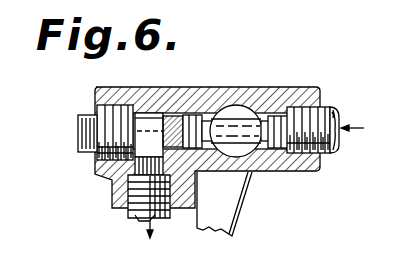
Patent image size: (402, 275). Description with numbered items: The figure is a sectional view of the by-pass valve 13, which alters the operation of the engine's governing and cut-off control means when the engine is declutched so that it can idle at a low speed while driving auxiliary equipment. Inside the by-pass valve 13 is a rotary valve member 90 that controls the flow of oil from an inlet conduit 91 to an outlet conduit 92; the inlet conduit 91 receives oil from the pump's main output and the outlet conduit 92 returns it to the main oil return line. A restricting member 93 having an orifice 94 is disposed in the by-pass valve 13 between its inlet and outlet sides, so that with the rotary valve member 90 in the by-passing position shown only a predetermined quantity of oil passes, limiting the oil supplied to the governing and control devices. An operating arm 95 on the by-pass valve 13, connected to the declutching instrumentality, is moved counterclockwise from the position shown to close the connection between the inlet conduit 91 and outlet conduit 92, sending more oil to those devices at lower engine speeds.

The by-pass valve 13 is at (277, 96).
The rotary valve member 90 is at (231, 106).
The inlet conduit 91 is at (321, 104).
The outlet conduit 92 is at (128, 218).
The restricting member 93 is at (170, 114).
The orifice 94 is at (193, 113).
The operating arm 95 is at (242, 210).